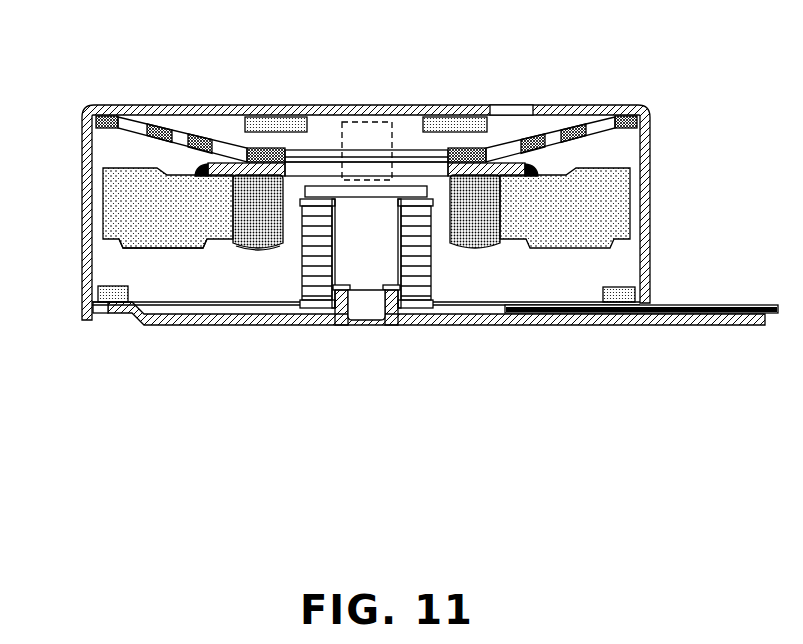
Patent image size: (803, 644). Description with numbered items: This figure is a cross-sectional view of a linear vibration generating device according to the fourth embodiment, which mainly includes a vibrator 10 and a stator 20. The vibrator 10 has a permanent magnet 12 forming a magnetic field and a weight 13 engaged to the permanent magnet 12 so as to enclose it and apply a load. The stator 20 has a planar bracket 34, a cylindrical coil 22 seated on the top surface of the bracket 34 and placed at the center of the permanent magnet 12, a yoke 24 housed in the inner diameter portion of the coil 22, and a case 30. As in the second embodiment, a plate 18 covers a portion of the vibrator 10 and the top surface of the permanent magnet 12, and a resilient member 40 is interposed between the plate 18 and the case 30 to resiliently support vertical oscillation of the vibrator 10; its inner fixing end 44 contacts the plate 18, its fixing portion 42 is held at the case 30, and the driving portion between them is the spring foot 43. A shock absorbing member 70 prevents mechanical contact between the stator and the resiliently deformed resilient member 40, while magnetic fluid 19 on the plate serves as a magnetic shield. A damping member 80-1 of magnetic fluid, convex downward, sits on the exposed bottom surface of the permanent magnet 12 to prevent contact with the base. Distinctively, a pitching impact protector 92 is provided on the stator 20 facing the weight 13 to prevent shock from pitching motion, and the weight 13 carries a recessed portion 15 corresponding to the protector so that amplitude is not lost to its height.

The vibrator 10 is at (309, 292).
The permanent magnet 12 is at (230, 243).
The weight 13 is at (157, 243).
The recessed portion 15 is at (107, 241).
The plate 18 is at (247, 160).
The magnetic fluid 19 is at (208, 167).
The stator 20 is at (428, 308).
The coil 22 is at (375, 294).
The yoke 24 is at (372, 268).
The case 30 is at (641, 268).
The bracket 34 is at (488, 318).
The resilient member 40 is at (355, 81).
The fixing portion 42 is at (105, 113).
The spring foot 43 is at (170, 124).
The inner fixing end 44 is at (262, 148).
The shock absorbing member 70 is at (293, 120).
The damping member 80-1 is at (259, 250).
The pitching impact protector 92 is at (100, 290).